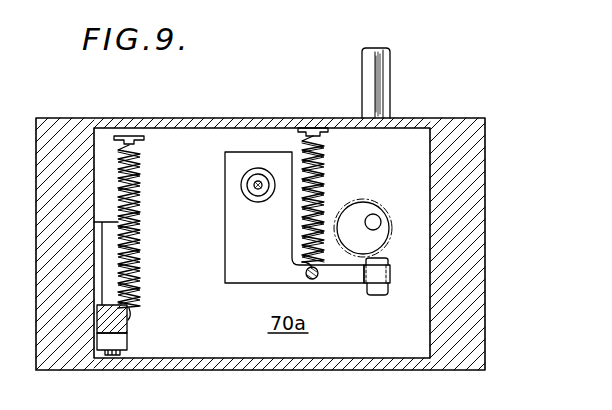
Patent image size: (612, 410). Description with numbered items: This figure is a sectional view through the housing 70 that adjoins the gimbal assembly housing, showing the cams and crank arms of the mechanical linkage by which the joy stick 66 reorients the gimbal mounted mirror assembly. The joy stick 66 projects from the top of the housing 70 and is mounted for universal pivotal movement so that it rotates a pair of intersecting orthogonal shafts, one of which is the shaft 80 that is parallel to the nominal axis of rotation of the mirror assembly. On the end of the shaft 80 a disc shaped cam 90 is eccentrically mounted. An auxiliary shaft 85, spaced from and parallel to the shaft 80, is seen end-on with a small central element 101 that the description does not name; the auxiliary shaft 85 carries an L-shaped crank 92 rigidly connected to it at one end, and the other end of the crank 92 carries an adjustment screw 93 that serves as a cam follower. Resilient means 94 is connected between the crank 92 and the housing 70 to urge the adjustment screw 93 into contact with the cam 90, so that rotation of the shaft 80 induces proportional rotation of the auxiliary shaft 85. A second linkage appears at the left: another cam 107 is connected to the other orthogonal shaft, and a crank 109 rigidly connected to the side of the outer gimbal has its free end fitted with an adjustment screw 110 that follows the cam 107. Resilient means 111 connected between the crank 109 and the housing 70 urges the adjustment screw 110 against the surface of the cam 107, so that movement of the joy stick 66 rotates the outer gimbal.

The housing 70 is at (476, 207).
The joy stick 66 is at (384, 78).
The resilient means 111 is at (137, 215).
The cam 107 is at (128, 240).
The crank 109 is at (128, 345).
The adjustment screw 110 is at (127, 357).
The L-shaped crank 92 is at (270, 245).
The auxiliary shaft 85 is at (243, 182).
The pivot pin 101 is at (253, 188).
The resilient means 94 is at (318, 188).
The disc shaped cam 90 is at (360, 213).
The shaft 80 is at (376, 222).
The adjustment screw 93 is at (378, 262).